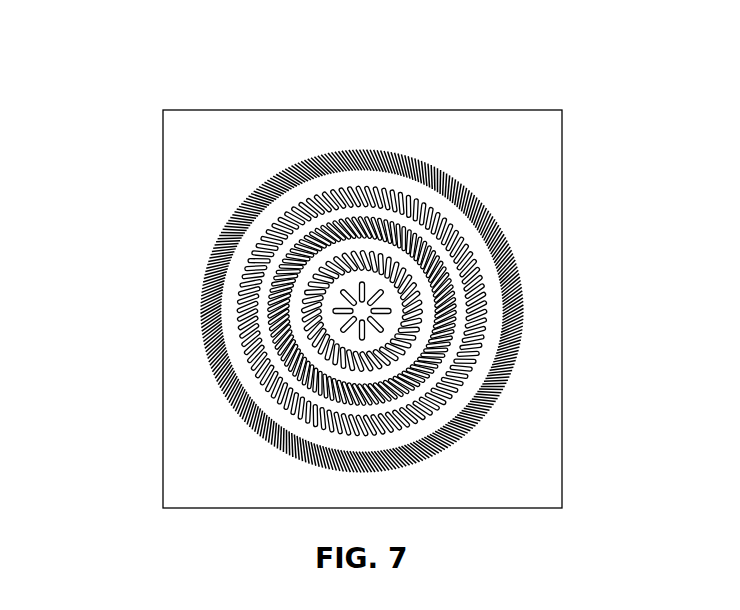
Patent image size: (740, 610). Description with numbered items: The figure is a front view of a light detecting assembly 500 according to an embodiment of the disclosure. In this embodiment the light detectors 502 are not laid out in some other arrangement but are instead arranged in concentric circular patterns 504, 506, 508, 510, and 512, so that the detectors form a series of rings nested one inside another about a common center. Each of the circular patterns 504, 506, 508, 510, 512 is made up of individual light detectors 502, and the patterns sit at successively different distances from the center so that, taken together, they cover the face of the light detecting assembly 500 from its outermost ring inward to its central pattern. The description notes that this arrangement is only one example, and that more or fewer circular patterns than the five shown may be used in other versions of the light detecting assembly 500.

The light detecting assembly 500 is at (138, 74).
The light detectors 502 is at (430, 256).
The circular pattern 504 is at (448, 175).
The circular pattern 506 is at (330, 188).
The circular pattern 508 is at (281, 309).
The circular pattern 510 is at (283, 353).
The circular pattern 512 is at (392, 312).